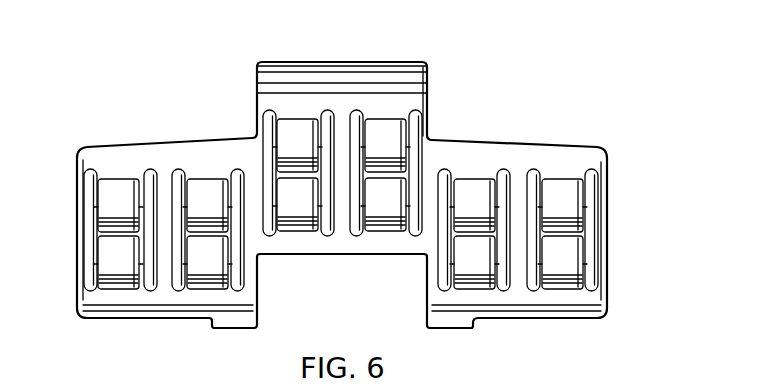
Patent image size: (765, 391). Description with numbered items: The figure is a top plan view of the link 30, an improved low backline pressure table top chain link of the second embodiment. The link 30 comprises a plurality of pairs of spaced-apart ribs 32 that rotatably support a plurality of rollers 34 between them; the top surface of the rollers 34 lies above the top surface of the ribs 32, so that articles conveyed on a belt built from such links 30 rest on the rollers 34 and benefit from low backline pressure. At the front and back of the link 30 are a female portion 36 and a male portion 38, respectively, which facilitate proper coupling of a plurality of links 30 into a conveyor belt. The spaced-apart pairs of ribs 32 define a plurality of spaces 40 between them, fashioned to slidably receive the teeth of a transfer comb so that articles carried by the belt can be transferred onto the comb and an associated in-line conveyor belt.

The link 30 is at (463, 68).
The ribs 32 is at (83, 267).
The rollers 34 is at (200, 288).
The female portion 36 is at (340, 255).
The male portion 38 is at (388, 78).
The spaces 40 is at (342, 127).